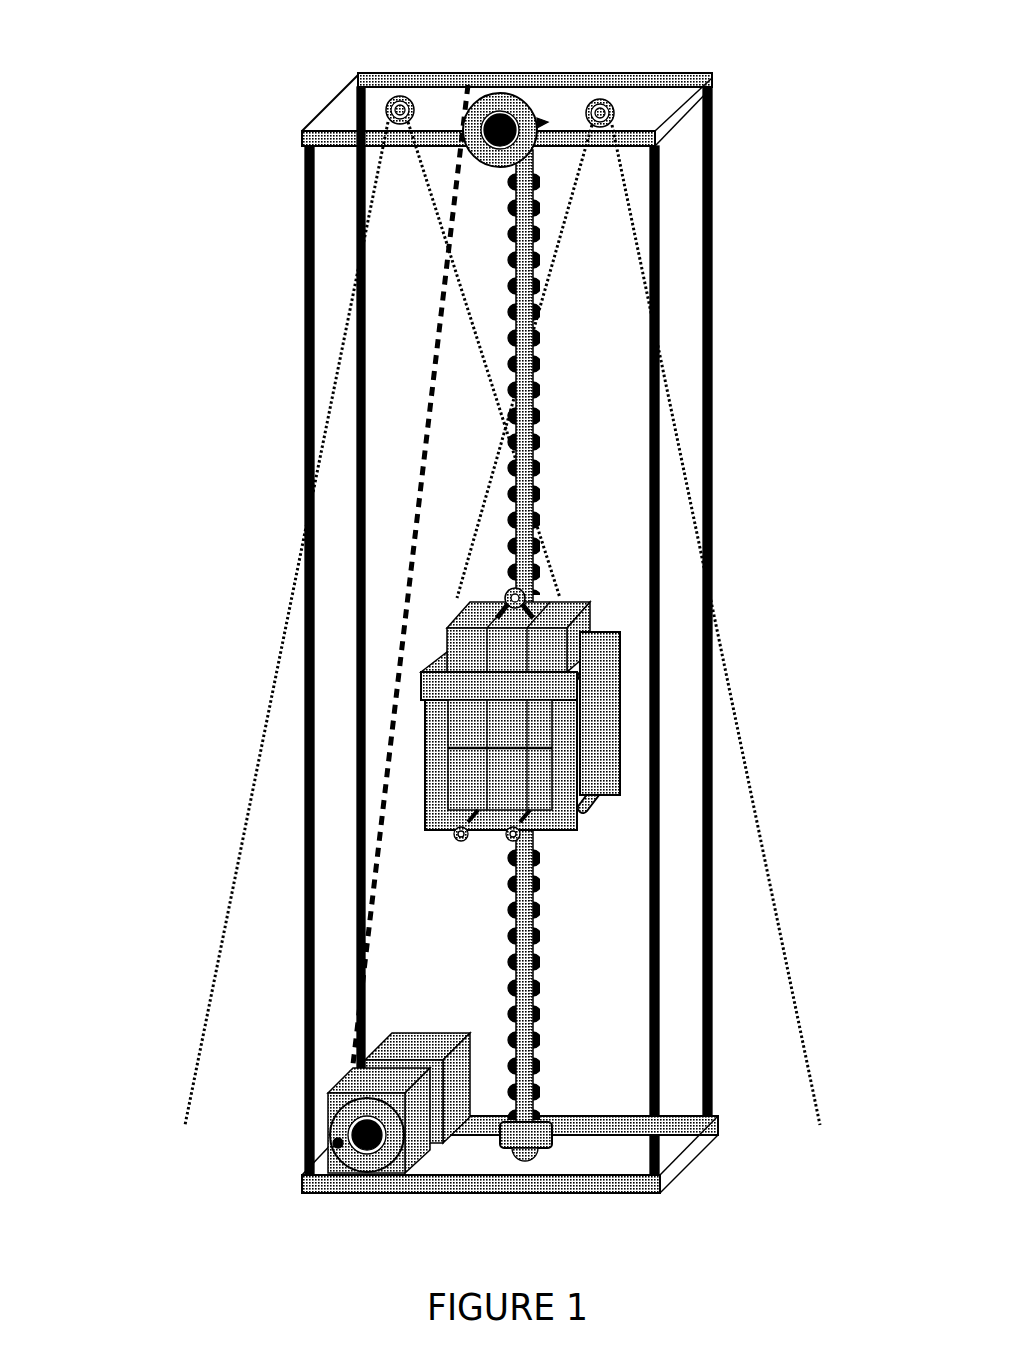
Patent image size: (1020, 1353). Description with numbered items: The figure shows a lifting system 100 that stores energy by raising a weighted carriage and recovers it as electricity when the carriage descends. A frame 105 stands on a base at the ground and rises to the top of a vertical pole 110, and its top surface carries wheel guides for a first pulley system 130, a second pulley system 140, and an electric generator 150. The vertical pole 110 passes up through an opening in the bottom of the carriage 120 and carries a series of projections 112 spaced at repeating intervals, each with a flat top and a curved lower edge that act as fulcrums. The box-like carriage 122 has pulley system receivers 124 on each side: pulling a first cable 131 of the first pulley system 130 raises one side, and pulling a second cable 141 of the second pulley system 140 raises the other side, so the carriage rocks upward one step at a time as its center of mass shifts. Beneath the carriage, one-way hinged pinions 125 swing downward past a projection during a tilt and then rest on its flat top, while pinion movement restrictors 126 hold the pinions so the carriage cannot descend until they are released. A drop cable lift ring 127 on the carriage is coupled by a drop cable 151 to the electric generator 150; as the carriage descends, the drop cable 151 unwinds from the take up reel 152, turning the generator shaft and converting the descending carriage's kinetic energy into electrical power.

The lifting system 100 is at (175, 65).
The frame 105 is at (575, 68).
The vertical pole 110 is at (639, 627).
The projections 112 is at (535, 972).
The carriage 120 is at (533, 720).
The carriage 122 is at (593, 810).
The pulley system receivers 124 is at (455, 605).
The pinions 125 is at (540, 835).
The pinion movement restrictors 126 is at (504, 840).
The drop cable lift ring 127 is at (540, 505).
The first pulley system 130 is at (398, 96).
The first cable 131 is at (254, 670).
The second pulley system 140 is at (646, 107).
The second cable 141 is at (764, 705).
The electric generator 150 is at (407, 1149).
The drop cable 151 is at (408, 361).
The take up reel 152 is at (333, 1173).